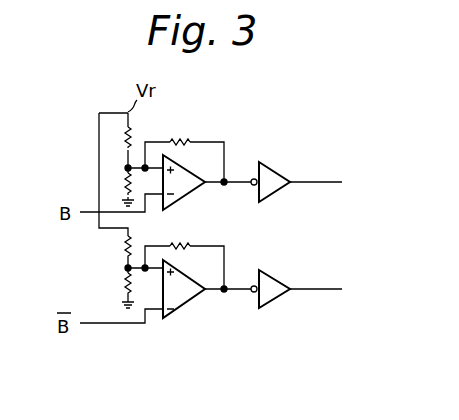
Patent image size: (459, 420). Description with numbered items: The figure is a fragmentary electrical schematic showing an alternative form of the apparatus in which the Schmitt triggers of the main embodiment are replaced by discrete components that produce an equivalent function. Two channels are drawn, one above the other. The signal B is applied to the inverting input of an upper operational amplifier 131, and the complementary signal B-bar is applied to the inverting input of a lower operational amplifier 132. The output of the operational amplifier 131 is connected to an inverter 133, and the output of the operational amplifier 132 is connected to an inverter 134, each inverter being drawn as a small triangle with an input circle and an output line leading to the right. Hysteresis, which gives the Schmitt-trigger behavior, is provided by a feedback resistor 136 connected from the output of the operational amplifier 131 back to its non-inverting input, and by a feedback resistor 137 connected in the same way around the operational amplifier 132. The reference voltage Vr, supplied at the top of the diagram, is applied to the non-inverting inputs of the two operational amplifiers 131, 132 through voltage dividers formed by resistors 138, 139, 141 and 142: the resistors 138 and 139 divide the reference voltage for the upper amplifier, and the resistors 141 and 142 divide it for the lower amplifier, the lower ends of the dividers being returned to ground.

The operational amplifier 131 is at (195, 190).
The operational amplifier 132 is at (183, 305).
The inverter 133 is at (292, 159).
The inverter 134 is at (282, 274).
The feedback resistor 136 is at (188, 140).
The feedback resistor 137 is at (195, 243).
The resistor 138 is at (122, 141).
The resistor 139 is at (122, 186).
The resistor 141 is at (122, 250).
The resistor 142 is at (122, 290).